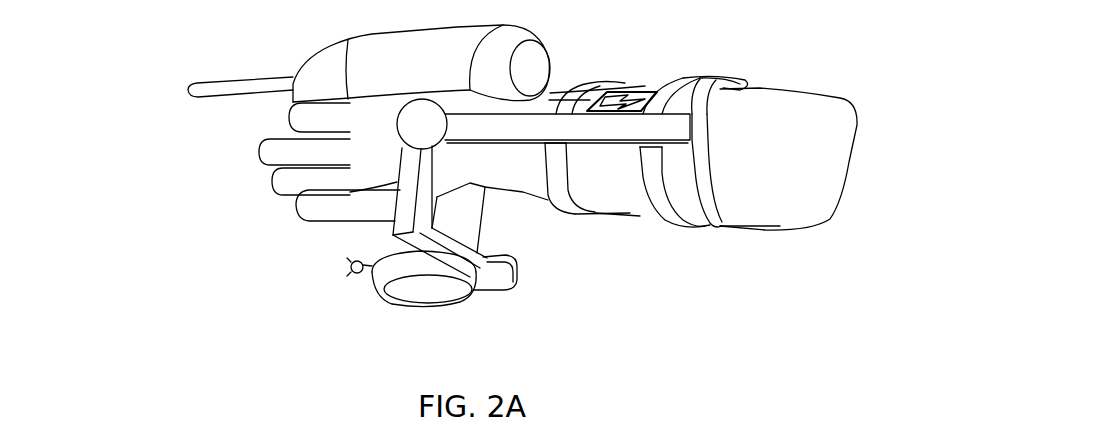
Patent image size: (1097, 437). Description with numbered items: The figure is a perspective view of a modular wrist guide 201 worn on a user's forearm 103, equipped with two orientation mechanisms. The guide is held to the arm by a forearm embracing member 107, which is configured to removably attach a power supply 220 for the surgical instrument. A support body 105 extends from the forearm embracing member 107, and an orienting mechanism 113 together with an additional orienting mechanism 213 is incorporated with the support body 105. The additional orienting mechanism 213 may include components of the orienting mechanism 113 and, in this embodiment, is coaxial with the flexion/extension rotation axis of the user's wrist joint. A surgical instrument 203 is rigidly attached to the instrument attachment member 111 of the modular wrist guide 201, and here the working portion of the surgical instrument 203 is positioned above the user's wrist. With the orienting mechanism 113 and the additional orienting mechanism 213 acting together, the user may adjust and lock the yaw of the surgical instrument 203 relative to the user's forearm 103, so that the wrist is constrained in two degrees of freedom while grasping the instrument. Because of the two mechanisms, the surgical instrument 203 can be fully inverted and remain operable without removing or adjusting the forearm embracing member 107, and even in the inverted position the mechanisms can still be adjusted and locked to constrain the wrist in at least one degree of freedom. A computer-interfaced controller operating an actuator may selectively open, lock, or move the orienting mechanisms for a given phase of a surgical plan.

The modular wrist guide 201 is at (146, 119).
The surgical instrument 203 is at (255, 80).
The orienting mechanism 113 is at (400, 137).
The additional orienting mechanism 213 is at (517, 269).
The instrument attachment member 111 is at (357, 283).
The support body 105 is at (497, 137).
The forearm embracing member 107 is at (630, 88).
The power supply 220 is at (622, 92).
The user's forearm 103 is at (847, 168).